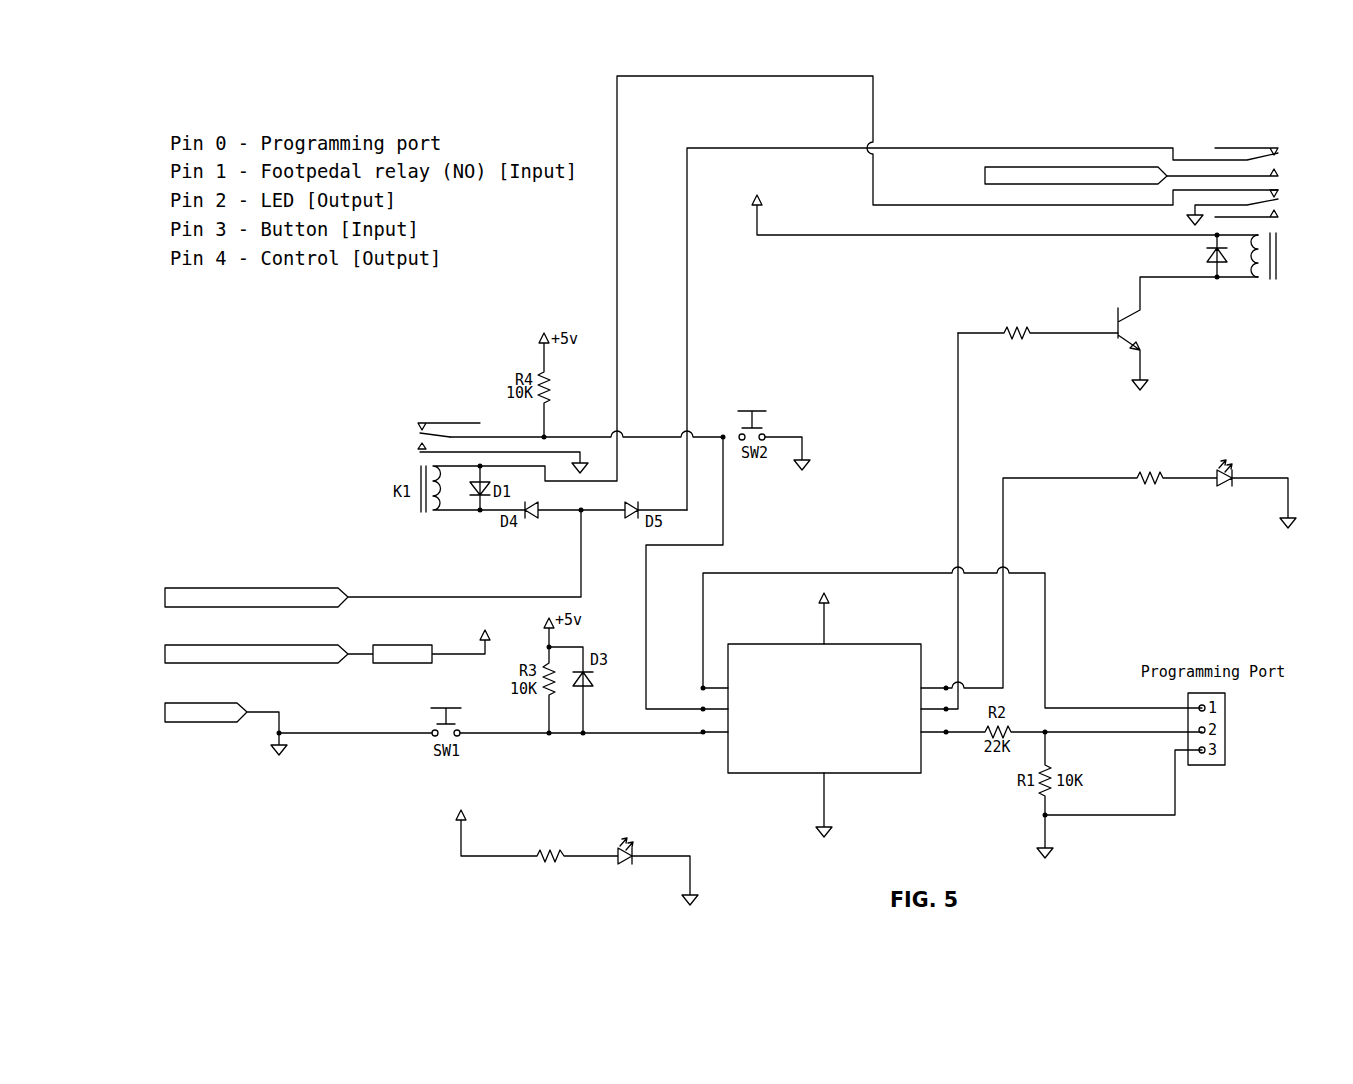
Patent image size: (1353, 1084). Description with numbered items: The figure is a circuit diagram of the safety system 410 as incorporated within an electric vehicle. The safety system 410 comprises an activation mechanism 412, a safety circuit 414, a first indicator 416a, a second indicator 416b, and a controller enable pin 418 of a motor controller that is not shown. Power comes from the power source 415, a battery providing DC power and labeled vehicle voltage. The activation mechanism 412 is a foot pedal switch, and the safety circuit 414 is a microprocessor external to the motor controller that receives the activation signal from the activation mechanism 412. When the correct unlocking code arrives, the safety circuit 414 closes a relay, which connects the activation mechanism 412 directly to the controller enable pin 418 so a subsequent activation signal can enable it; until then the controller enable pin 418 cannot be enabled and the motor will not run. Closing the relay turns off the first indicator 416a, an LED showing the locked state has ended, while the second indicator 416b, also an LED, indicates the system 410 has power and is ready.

The safety system 410 is at (1142, 131).
The controller enable pin 418 is at (1005, 166).
The first indicator 416a is at (1246, 431).
The safety circuit 414 is at (740, 775).
The activation mechanism 412 is at (227, 588).
The power source 415 is at (162, 667).
The second indicator 416b is at (651, 825).